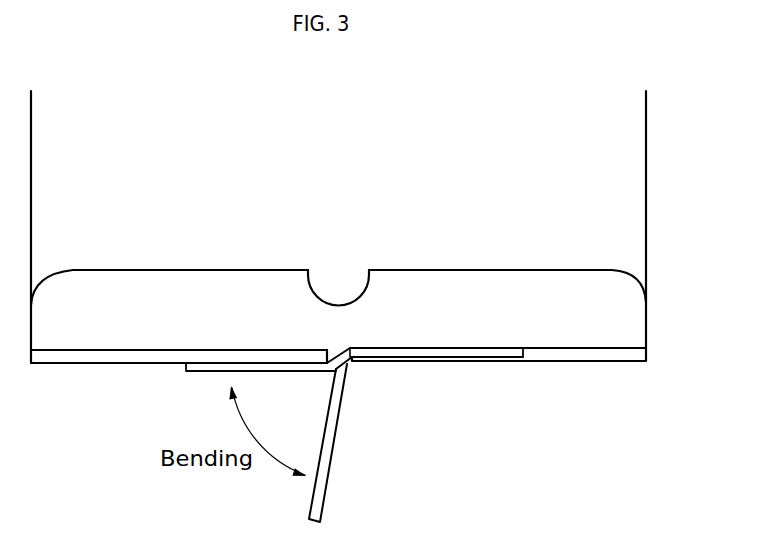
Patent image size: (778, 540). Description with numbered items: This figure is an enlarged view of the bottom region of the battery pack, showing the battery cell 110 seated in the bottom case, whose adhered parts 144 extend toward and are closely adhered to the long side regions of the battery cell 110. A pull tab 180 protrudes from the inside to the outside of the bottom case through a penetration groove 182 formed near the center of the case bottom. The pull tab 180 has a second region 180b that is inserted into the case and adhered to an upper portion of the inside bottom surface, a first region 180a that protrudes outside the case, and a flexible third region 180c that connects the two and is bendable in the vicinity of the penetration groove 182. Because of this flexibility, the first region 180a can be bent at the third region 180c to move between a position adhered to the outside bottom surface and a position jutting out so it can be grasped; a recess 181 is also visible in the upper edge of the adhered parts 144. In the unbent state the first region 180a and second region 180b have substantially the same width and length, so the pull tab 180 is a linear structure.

The battery cell 110 is at (646, 203).
The adhered parts 144 is at (627, 323).
The pull tab 180 is at (430, 436).
The first region 180a is at (361, 443).
The second region 180b is at (498, 352).
The third region 180c is at (343, 360).
The groove 181 is at (339, 278).
The penetration groove 182 is at (338, 350).